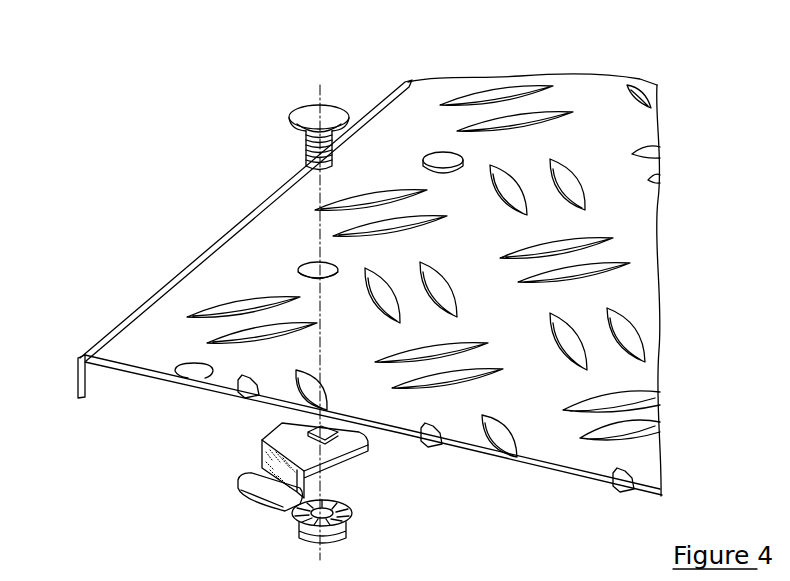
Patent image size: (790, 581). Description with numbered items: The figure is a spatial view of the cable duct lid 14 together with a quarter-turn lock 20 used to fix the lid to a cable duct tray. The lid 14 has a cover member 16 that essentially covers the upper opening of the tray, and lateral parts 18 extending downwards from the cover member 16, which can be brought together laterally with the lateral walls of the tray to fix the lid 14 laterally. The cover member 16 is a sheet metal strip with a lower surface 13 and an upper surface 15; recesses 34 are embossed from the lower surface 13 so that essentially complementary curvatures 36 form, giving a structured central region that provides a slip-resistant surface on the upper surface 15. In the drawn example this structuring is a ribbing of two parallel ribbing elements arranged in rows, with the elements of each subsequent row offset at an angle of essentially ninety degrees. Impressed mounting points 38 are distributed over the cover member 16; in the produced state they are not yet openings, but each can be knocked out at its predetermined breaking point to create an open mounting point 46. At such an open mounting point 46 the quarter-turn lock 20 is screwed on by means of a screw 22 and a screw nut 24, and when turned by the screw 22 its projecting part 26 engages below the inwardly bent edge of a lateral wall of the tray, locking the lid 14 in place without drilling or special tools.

The lower surface 13 is at (650, 496).
The cable duct lid 14 is at (152, 162).
The upper surface 15 is at (633, 380).
The cover member 16 is at (632, 237).
The lateral part 18 is at (93, 376).
The quarter-turn lock 20 is at (270, 441).
The screw 22 is at (325, 115).
The screw nut 24 is at (338, 536).
The projecting part 26 is at (258, 482).
The recess 34 is at (623, 468).
The curvature 36 is at (426, 432).
The mounting point 38 is at (438, 153).
The open mounting point 46 is at (308, 268).